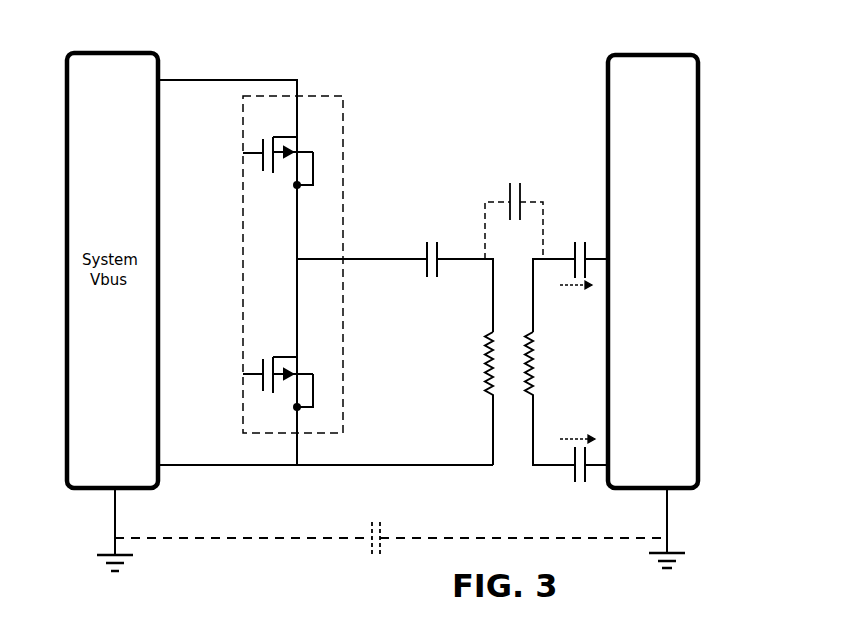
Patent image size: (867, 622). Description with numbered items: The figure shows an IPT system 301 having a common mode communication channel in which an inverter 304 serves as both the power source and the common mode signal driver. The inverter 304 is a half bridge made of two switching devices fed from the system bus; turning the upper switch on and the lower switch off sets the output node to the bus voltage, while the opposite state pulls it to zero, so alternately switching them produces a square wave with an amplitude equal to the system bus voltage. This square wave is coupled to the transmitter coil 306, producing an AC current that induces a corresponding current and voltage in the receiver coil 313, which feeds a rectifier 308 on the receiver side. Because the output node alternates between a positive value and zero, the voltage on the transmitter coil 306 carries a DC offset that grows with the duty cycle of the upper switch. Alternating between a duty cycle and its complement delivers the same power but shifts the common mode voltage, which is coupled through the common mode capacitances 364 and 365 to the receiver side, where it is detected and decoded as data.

The IPT system 301 is at (460, 60).
The inverter 304 is at (322, 96).
The transmitter coil 306 is at (488, 328).
The rectifier 308 is at (670, 55).
The receiver coil 313 is at (532, 367).
The common mode capacitance 364 is at (498, 190).
The common mode capacitance 365 is at (383, 520).